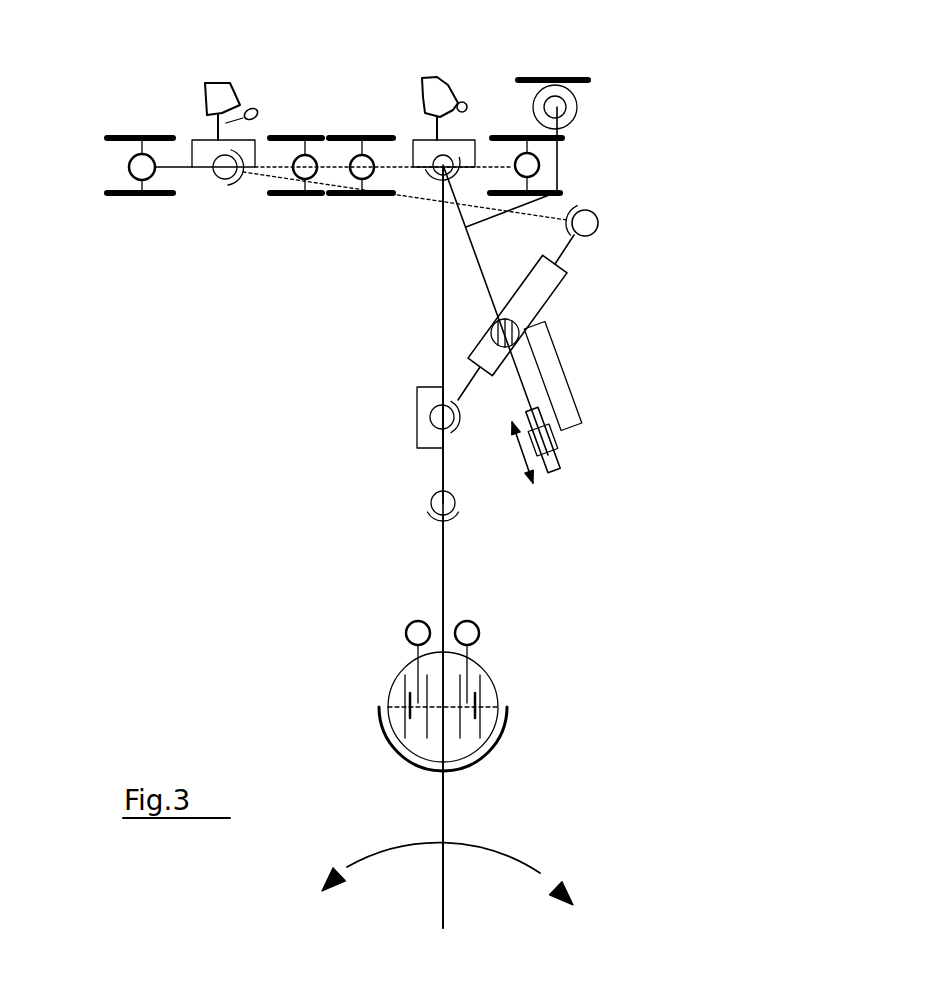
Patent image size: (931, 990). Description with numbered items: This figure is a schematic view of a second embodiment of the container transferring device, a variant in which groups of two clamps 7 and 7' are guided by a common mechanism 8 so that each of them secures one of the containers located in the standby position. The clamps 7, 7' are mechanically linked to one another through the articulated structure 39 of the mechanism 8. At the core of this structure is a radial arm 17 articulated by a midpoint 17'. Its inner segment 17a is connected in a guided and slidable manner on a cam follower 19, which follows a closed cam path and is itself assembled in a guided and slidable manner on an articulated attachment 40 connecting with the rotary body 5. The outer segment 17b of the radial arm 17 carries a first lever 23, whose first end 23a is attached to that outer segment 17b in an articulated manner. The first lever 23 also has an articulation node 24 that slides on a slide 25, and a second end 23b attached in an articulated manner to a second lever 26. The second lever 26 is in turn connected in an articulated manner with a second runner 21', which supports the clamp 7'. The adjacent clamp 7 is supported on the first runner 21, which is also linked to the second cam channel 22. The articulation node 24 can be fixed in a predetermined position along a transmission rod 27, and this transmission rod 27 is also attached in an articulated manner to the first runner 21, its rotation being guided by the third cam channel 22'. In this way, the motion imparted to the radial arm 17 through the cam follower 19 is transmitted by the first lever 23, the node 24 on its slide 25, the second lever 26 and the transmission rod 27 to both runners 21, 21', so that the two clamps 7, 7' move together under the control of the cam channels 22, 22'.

The rotary body 5 is at (443, 798).
The clamp 7 is at (451, 78).
The clamp 7' is at (232, 78).
The common mechanism 8 is at (368, 483).
The radial arm 17 is at (346, 547).
The inner segment 17a is at (443, 597).
The outer segment 17b is at (443, 323).
The midpoint 17' is at (493, 510).
The cam follower 19 is at (482, 633).
The first runner 21 is at (463, 130).
The second runner 21' is at (221, 193).
The second cam channel 22 is at (107, 167).
The third cam channel 22' is at (570, 153).
The first lever 23 is at (575, 278).
The first end 23a is at (447, 388).
The second end 23b is at (645, 230).
The articulation node 24 is at (424, 301).
The slide 25 is at (599, 363).
The second lever 26 is at (405, 207).
The transmission rod 27 is at (558, 462).
The articulated structure 39 is at (602, 320).
The articulated attachment 40 is at (508, 723).